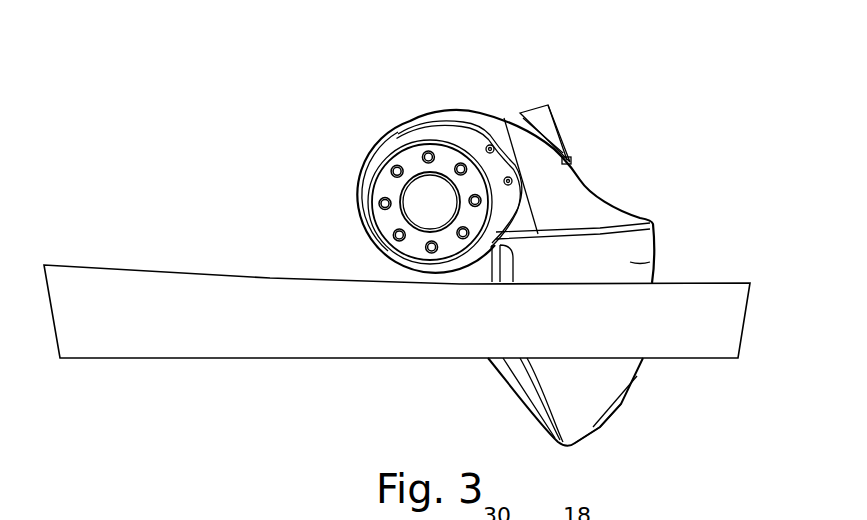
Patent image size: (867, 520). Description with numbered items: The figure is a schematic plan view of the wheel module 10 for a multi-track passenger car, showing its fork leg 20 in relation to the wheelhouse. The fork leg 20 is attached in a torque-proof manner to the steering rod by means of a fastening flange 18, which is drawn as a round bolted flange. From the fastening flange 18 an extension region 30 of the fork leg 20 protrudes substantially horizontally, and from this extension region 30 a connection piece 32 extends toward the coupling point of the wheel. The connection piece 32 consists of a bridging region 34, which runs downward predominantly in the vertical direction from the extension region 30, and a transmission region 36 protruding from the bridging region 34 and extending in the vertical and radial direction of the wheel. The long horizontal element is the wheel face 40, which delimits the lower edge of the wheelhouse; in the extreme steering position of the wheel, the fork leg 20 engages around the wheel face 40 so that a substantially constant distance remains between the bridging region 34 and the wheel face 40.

The wheel module 10 is at (166, 160).
The fastening flange 18 is at (405, 163).
The fork leg 20 is at (655, 165).
The extension region 30 is at (477, 128).
The connection piece 32 is at (592, 420).
The bridging region 34 is at (653, 255).
The transmission region 36 is at (623, 380).
The wheel face 40 is at (156, 330).